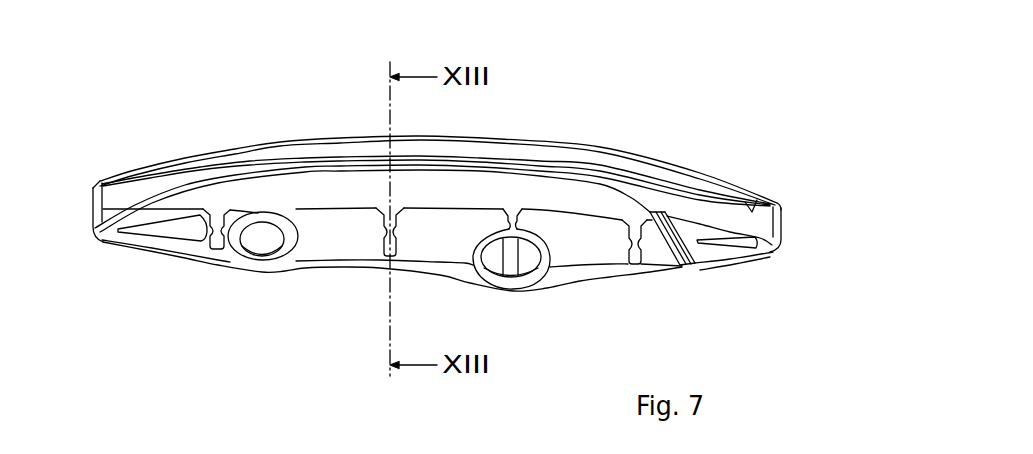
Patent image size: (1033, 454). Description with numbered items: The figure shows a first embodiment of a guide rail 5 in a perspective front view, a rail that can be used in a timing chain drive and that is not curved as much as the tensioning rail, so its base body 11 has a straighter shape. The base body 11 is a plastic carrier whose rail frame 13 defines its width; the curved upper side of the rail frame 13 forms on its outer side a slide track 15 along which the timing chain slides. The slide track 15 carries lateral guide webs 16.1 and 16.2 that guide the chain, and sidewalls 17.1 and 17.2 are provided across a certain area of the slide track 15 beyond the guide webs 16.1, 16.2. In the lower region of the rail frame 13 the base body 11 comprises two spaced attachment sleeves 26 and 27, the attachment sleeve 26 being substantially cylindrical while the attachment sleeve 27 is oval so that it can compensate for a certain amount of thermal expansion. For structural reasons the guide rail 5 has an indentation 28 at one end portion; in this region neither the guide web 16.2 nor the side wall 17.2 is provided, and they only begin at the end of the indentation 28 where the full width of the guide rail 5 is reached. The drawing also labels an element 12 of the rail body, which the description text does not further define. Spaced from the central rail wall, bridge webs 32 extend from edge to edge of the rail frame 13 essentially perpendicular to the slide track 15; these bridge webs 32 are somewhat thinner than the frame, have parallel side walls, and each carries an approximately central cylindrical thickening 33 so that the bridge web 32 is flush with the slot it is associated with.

The guide rail 5 is at (543, 128).
The base body 11 is at (124, 214).
The base plate 12 is at (317, 246).
The rail frame 13 is at (787, 251).
The slide track 15 is at (774, 202).
The guide web 16.1 is at (778, 203).
The guide web 16.2 is at (700, 262).
The sidewall 17.1 is at (694, 170).
The sidewall 17.2 is at (606, 167).
The attachment sleeve 26 is at (262, 247).
The attachment sleeve 27 is at (531, 257).
The indentation 28 is at (718, 243).
The bridge web 32 is at (224, 219).
The cylindrical thickening 33 is at (190, 227).